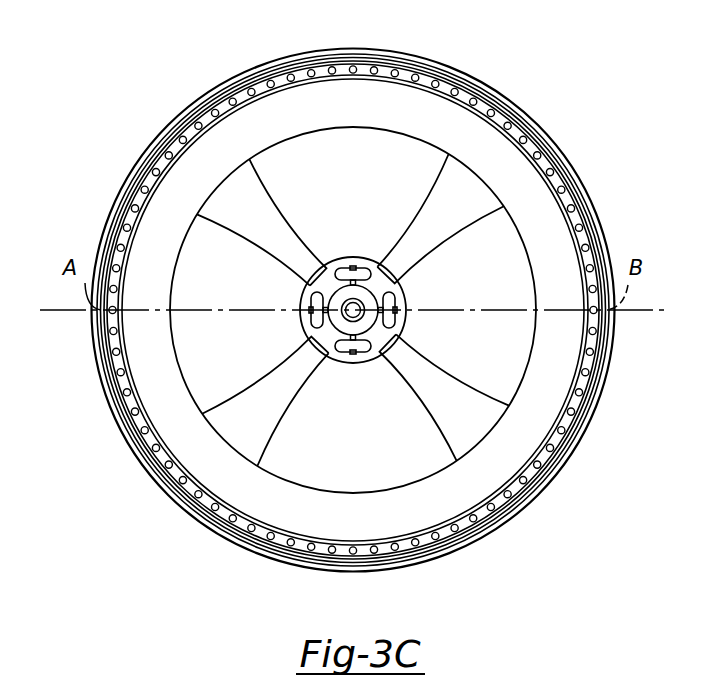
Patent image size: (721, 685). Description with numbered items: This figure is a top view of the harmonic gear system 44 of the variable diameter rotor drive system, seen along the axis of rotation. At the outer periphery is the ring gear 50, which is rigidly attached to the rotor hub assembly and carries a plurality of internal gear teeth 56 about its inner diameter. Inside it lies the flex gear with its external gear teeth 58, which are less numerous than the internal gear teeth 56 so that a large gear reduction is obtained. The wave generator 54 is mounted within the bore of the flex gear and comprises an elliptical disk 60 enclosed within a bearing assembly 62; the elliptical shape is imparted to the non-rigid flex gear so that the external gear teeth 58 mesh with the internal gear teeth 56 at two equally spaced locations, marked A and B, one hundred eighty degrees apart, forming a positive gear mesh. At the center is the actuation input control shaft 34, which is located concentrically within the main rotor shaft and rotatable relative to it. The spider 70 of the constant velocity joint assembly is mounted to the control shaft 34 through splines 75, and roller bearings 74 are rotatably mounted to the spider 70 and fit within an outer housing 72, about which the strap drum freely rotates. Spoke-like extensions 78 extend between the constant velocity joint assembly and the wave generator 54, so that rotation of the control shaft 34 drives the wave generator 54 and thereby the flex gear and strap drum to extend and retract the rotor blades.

The harmonic gear system 44 is at (122, 110).
The ring gear 50 is at (212, 84).
The wave generator 54 is at (428, 112).
The internal gear teeth 56 is at (293, 56).
The external gear teeth 58 is at (279, 76).
The elliptical disk 60 is at (406, 80).
The bearing assembly 62 is at (348, 73).
The spider 70 is at (372, 357).
The outer housing 72 is at (403, 320).
The roller bearings 74 is at (357, 272).
The splines 75 is at (338, 322).
The extension 78 is at (219, 205).
The actuation input control shaft 34 is at (364, 309).